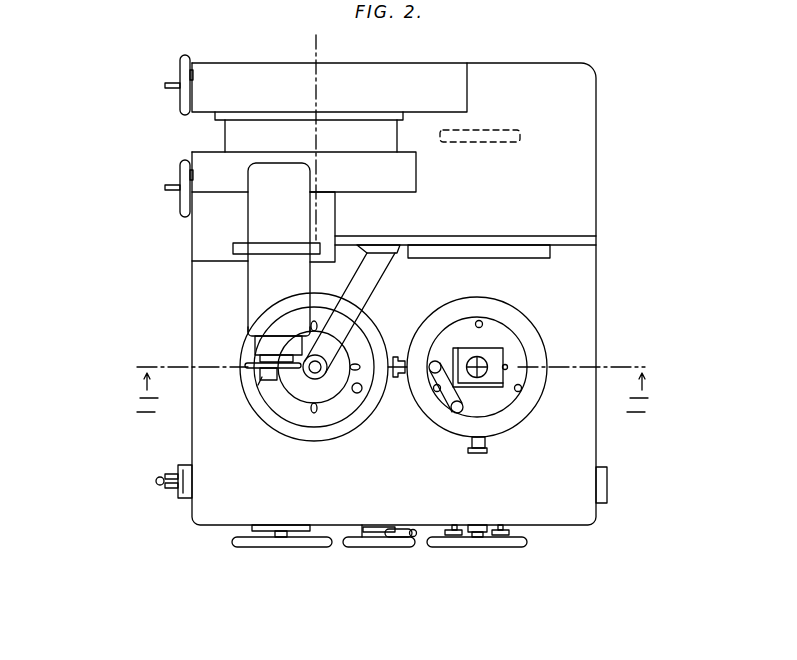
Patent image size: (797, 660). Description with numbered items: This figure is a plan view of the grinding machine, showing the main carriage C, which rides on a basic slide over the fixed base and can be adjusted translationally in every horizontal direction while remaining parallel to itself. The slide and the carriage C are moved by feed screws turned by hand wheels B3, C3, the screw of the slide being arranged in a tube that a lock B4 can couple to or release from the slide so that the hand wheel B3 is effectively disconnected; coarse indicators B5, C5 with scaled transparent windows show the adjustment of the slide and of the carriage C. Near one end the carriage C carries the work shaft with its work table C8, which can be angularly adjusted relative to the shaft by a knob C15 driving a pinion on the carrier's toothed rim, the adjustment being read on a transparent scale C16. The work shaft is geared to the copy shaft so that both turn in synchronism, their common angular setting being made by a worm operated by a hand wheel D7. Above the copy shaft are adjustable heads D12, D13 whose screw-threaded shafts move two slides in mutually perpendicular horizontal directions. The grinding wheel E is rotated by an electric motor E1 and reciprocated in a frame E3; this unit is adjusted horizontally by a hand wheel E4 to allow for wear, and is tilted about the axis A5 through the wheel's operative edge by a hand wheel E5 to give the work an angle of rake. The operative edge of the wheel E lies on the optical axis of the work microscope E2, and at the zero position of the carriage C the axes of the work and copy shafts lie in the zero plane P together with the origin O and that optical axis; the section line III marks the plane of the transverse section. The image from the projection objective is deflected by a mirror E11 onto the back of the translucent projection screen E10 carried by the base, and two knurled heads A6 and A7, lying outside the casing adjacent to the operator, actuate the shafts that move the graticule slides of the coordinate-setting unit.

The tilt axis A5 is at (316, 42).
The hand wheel E5 is at (178, 95).
The hand wheel E4 is at (178, 188).
The electric motor E1 is at (260, 232).
The frame E3 is at (200, 253).
The grinding wheel E is at (245, 365).
The projection screen E10 is at (545, 250).
The mirror E11 is at (512, 130).
The work microscope E2 is at (307, 370).
The work table C8 is at (307, 393).
The knob C15 is at (362, 392).
The transparent scale C16 is at (262, 377).
The zero plane P is at (213, 368).
The section III- III is at (392, 394).
The origin O is at (478, 366).
The adjustable head D12 is at (401, 350).
The adjustable head D13 is at (488, 452).
The lock B4 is at (156, 481).
The main carriage C is at (205, 516).
The coarse indicator C5 is at (607, 485).
The hand wheel B3 is at (287, 547).
The coarse indicator B5 is at (363, 552).
The hand wheel D7 is at (372, 545).
The hand wheel C3 is at (482, 546).
The knurled head A6 is at (455, 538).
The knurled head A7 is at (506, 540).